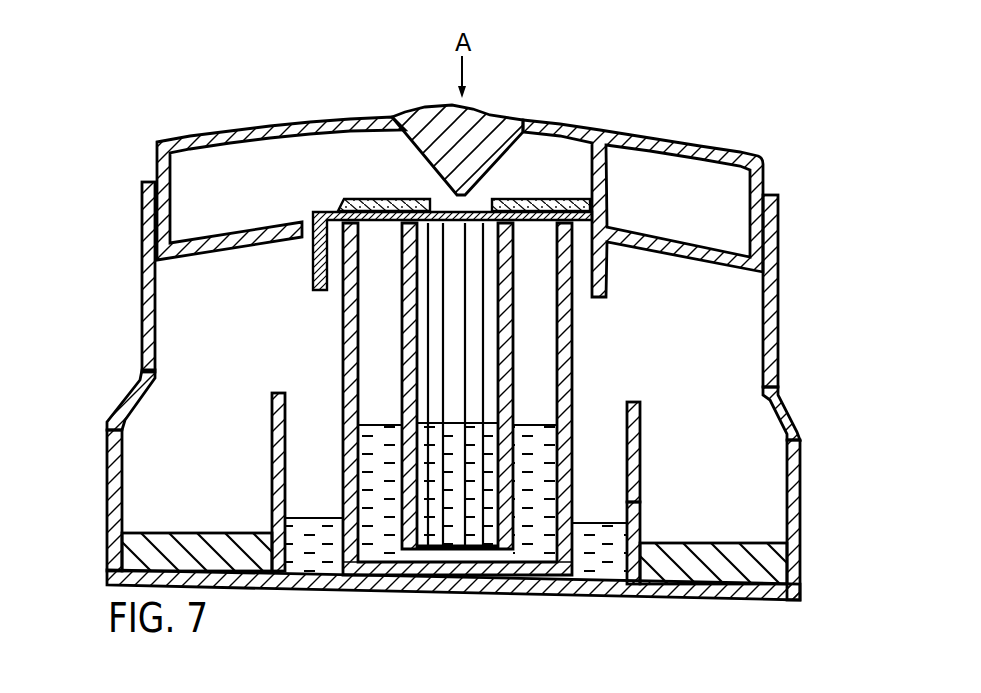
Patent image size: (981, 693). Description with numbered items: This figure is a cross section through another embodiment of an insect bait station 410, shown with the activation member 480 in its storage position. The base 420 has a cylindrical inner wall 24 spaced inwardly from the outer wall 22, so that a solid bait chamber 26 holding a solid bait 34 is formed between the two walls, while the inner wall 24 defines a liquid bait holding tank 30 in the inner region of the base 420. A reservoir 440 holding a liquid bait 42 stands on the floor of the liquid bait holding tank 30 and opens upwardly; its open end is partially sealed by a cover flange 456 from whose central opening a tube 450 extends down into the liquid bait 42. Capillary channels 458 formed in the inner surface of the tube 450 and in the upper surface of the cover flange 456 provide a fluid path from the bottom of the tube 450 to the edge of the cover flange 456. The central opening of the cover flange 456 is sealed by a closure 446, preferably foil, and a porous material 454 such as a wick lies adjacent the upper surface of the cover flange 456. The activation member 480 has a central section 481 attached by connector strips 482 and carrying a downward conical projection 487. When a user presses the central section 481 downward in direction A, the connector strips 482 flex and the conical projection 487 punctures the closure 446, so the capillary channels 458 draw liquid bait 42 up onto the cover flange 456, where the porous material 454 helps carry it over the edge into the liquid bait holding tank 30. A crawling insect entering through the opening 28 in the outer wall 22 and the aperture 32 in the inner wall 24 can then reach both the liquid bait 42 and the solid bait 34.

The insect bait station 410 is at (122, 362).
The base 420 is at (104, 552).
The solid bait chamber 26 is at (140, 431).
The outer wall 22 is at (790, 468).
The opening 28 is at (117, 498).
The solid bait 34 is at (225, 538).
The inner wall 24 is at (638, 432).
The aperture 32 is at (638, 503).
The liquid bait holding tank 30 is at (606, 404).
The reservoir 440 is at (567, 514).
The liquid bait 42 is at (332, 585).
The cover flange 456 is at (548, 232).
The tube 450 is at (510, 298).
The capillary channels 458 is at (478, 369).
The closure 446 is at (562, 203).
The porous material 454 is at (357, 198).
The activation member 480 is at (307, 125).
The connector strips 482 is at (575, 127).
The conical projection 487 is at (487, 157).
The central section 481 is at (488, 90).